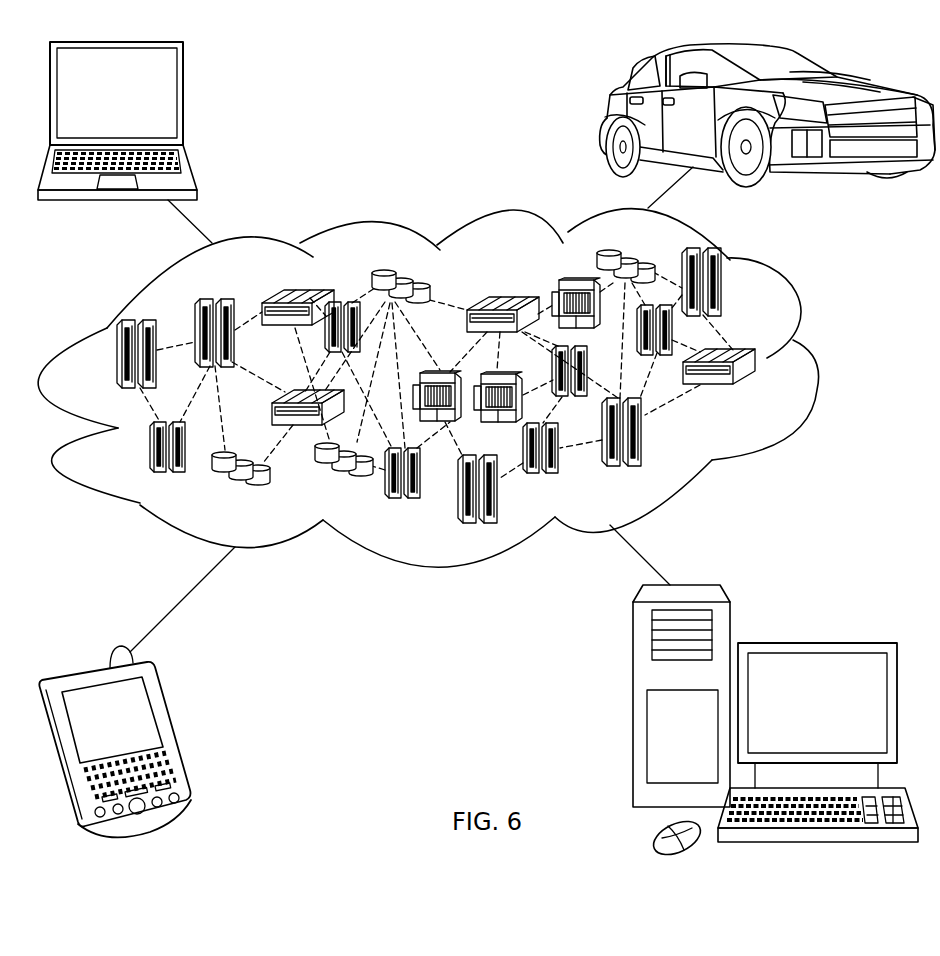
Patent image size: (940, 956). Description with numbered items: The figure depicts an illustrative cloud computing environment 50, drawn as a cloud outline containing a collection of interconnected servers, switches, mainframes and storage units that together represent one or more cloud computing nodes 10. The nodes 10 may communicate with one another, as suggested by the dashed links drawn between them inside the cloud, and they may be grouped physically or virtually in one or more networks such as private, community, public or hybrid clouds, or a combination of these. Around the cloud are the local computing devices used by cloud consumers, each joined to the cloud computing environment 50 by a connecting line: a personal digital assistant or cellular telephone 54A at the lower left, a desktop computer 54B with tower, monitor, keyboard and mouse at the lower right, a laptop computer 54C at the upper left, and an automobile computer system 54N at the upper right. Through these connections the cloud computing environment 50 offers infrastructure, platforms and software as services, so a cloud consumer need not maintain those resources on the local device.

The cloud computing node 10 is at (758, 392).
The cloud computing environment 50 is at (812, 362).
The personal digital assistant or cellular telephone 54A is at (172, 732).
The desktop computer 54B is at (812, 643).
The laptop computer 54C is at (182, 102).
The automobile computer system 54N is at (592, 115).